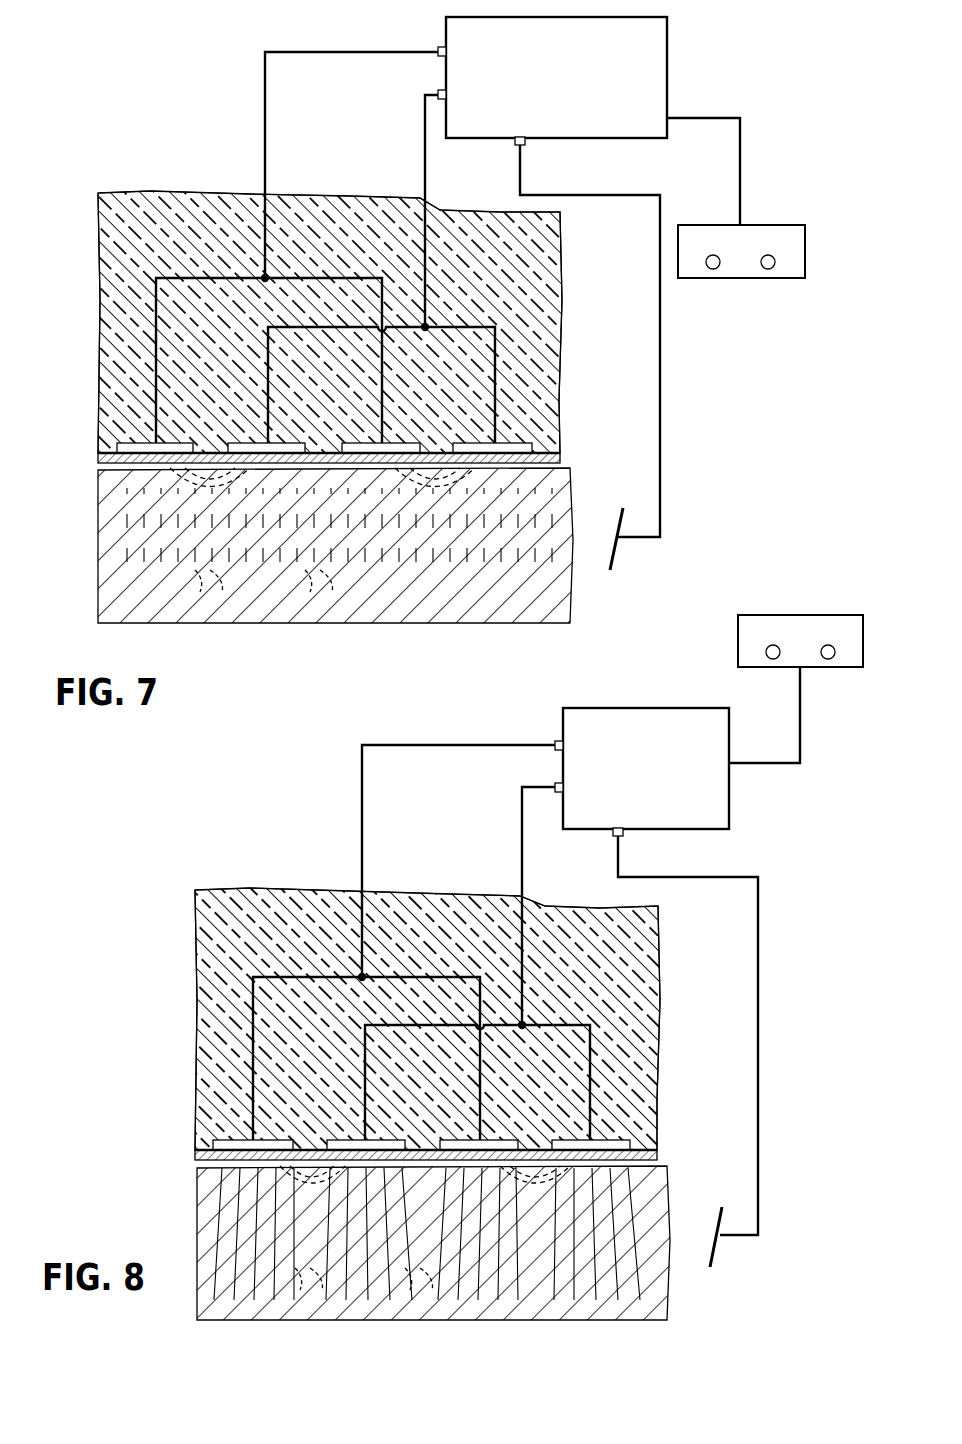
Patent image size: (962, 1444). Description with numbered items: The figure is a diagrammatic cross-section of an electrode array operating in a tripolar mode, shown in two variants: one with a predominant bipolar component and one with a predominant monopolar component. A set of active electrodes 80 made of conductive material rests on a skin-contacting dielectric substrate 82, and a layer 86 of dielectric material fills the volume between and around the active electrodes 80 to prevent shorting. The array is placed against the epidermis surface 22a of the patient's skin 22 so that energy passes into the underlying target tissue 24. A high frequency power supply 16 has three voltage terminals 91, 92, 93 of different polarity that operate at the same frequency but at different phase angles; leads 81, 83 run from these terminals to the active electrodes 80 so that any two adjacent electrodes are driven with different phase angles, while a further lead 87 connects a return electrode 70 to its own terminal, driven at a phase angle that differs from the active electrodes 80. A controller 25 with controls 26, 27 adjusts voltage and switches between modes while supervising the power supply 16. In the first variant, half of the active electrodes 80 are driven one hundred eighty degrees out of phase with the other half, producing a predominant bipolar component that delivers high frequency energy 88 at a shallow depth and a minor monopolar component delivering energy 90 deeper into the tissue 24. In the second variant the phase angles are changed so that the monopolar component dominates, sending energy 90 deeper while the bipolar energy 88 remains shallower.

In FIG. 7, the high frequency power supply 16 is at (667, 86).
In FIG. 8, the high frequency power supply 16 is at (669, 708).
In FIG. 7, the skin 22 is at (563, 460).
In FIG. 8, the skin 22 is at (660, 1158).
In FIG. 7, the epidermis surface 22a is at (98, 446).
In FIG. 8, the epidermis surface 22a is at (196, 1144).
In FIG. 7, the target tissue 24 is at (573, 520).
In FIG. 8, the target tissue 24 is at (672, 1216).
In FIG. 7, the controller 25 is at (805, 254).
In FIG. 8, the controller 25 is at (738, 632).
In FIG. 7, the control 26 is at (713, 269).
In FIG. 8, the control 26 is at (773, 659).
In FIG. 7, the control 27 is at (768, 269).
In FIG. 8, the control 27 is at (828, 659).
In FIG. 7, the return electrode 70 is at (618, 556).
In FIG. 8, the return electrode 70 is at (718, 1254).
In FIG. 7, the active electrodes 80 is at (235, 440).
In FIG. 8, the active electrodes 80 is at (332, 1138).
In FIG. 7, the first lead wire 81 is at (265, 96).
In FIG. 8, the first lead wire 81 is at (362, 774).
In FIG. 7, the dielectric substrate 82 is at (560, 452).
In FIG. 8, the dielectric substrate 82 is at (657, 1150).
In FIG. 7, the second lead wire 83 is at (425, 148).
In FIG. 8, the second lead wire 83 is at (522, 828).
In FIG. 7, the dielectric layer 86 is at (157, 212).
In FIG. 8, the dielectric layer 86 is at (255, 910).
In FIG. 7, the probe lead wire 87 is at (660, 408).
In FIG. 8, the probe lead wire 87 is at (758, 1005).
In FIG. 7, the high frequency energy (bipolar component) 88 is at (336, 524).
In FIG. 8, the high frequency energy (bipolar component) 88 is at (427, 1233).
In FIG. 7, the high frequency energy (monopolar component) 90 is at (263, 594).
In FIG. 8, the high frequency energy (monopolar component) 90 is at (363, 1292).
In FIG. 7, the voltage terminal 91 is at (440, 48).
In FIG. 8, the voltage terminal 91 is at (557, 742).
In FIG. 7, the voltage terminal 92 is at (440, 91).
In FIG. 8, the voltage terminal 92 is at (557, 784).
In FIG. 7, the voltage terminal 93 is at (525, 144).
In FIG. 8, the voltage terminal 93 is at (623, 835).